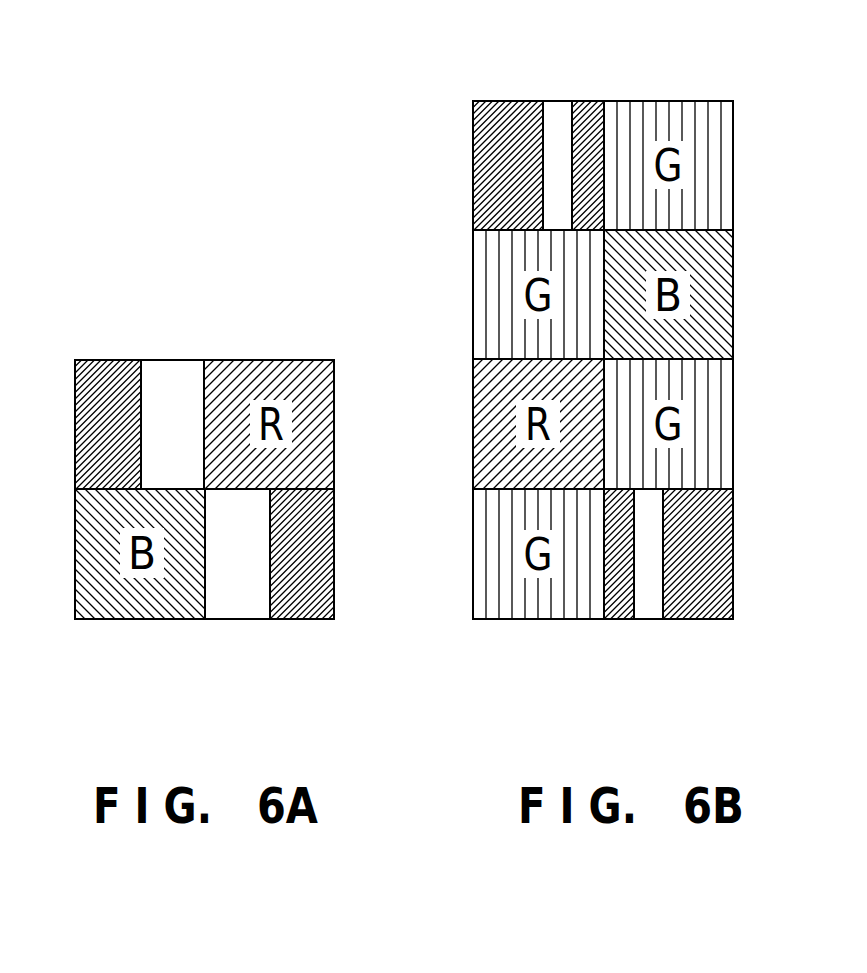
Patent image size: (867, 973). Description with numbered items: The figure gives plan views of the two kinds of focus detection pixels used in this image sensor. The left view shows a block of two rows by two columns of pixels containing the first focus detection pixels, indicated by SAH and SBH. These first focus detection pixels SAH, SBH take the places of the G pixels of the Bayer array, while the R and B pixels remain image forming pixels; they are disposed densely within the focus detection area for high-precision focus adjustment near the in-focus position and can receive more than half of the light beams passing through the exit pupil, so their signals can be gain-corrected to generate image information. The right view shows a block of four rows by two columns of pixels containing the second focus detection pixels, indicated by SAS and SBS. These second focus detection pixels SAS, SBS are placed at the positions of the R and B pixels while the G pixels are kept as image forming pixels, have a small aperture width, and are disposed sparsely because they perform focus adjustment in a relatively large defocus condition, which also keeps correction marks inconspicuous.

In FIG. 6A, the first focus detection pixel SAH is at (137, 360).
In FIG. 6A, the first focus detection pixel SBH is at (271, 620).
In FIG. 6B, the second focus detection pixel SAS is at (540, 101).
In FIG. 6B, the second focus detection pixel SBS is at (664, 620).